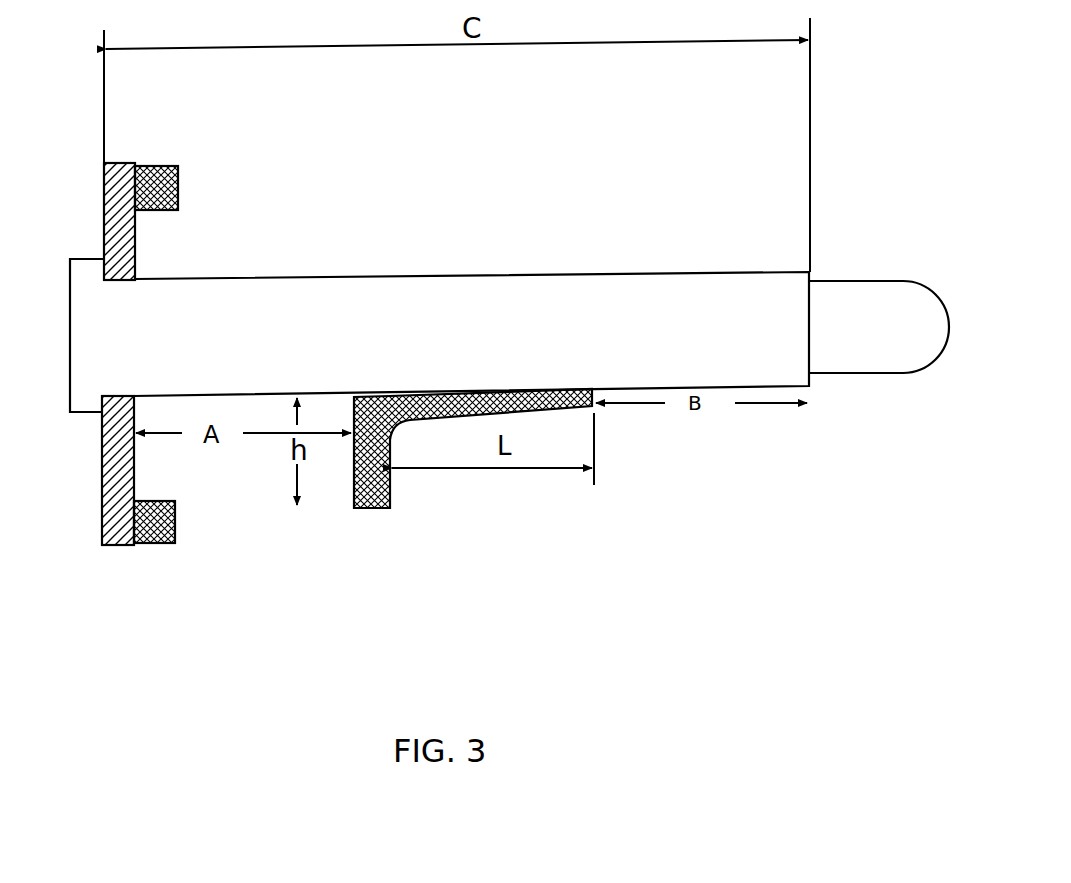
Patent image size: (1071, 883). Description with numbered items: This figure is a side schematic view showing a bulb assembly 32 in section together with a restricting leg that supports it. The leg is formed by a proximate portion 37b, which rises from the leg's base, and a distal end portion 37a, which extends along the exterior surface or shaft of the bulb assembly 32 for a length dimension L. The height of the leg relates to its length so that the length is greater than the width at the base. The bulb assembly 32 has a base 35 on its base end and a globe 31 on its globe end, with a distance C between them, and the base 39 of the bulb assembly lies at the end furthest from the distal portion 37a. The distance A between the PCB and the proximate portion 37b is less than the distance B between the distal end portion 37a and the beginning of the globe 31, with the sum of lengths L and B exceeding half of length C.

The globe 31 is at (845, 355).
The bulb assembly 32 is at (755, 298).
The base 35 is at (125, 355).
The distal end portion of the leg 37a is at (516, 408).
The proximate portion of the leg 37b is at (356, 440).
The base of the bulb assembly 39 is at (85, 298).